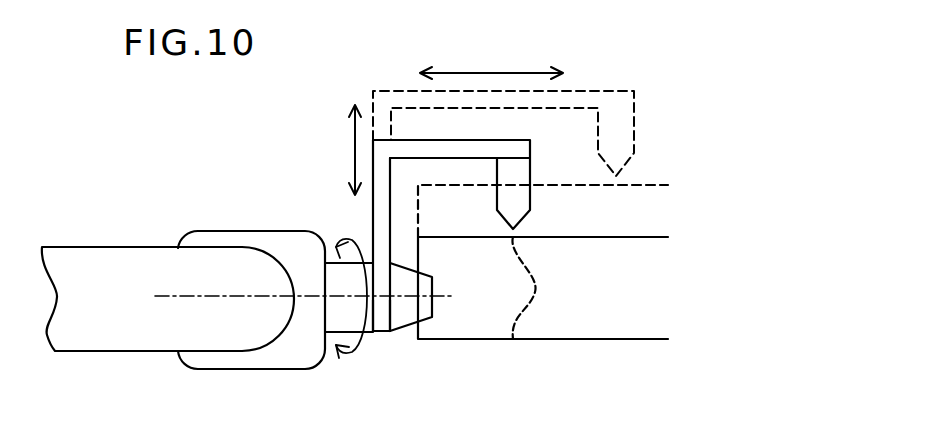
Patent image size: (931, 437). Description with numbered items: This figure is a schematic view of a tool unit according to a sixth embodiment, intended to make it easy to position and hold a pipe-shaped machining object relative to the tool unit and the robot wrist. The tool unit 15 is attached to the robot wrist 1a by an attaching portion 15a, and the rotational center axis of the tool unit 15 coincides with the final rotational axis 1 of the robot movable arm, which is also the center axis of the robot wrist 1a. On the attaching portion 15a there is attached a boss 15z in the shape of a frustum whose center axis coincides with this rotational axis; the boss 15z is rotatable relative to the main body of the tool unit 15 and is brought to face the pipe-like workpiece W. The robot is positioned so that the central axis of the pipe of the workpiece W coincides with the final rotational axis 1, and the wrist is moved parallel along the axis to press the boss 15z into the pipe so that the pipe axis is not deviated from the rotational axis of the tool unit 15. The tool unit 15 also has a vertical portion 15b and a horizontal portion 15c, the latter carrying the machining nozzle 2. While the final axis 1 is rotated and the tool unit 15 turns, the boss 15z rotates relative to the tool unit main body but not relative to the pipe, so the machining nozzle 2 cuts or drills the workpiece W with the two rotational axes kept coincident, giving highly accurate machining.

The final rotational axis 1 is at (170, 295).
The robot wrist 1a is at (277, 243).
The tool unit 15 is at (318, 126).
The attaching portion 15a is at (370, 330).
The vertical portion 15b is at (382, 227).
The horizontal portion 15c is at (455, 150).
The boss 15z is at (402, 315).
The machining nozzle 2 is at (520, 176).
The workpiece W is at (597, 323).